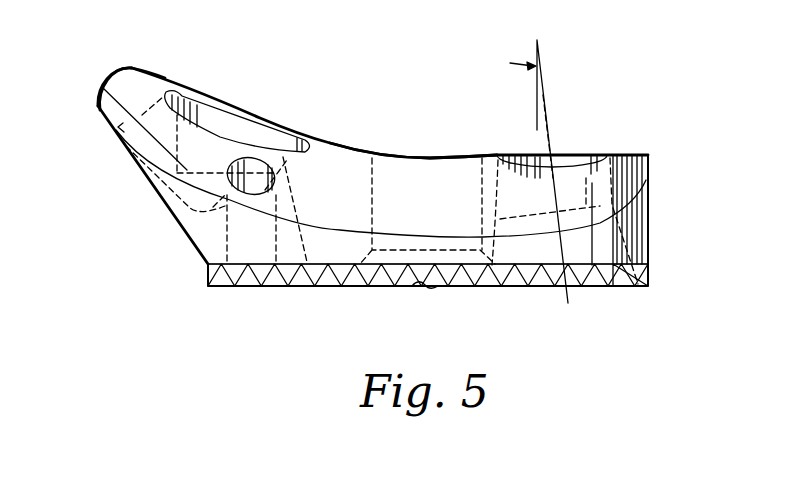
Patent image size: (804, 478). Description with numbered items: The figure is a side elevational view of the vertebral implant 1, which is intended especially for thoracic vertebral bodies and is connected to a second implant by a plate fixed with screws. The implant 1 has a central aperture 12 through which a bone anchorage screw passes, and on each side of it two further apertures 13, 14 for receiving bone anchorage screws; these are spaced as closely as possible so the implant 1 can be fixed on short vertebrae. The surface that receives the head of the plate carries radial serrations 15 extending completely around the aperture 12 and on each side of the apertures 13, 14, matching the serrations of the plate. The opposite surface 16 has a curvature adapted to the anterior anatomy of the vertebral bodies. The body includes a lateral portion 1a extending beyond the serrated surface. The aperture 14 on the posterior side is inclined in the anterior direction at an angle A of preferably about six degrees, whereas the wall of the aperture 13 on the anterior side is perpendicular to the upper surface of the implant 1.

The vertebral implant 1 is at (655, 118).
The lateral portion 1a is at (100, 113).
The central aperture 12 is at (462, 173).
The aperture 13 is at (234, 126).
The aperture 14 is at (530, 163).
The radial serrations 15 is at (318, 286).
The opposite surface 16 is at (345, 143).
The inclination angle A is at (544, 66).